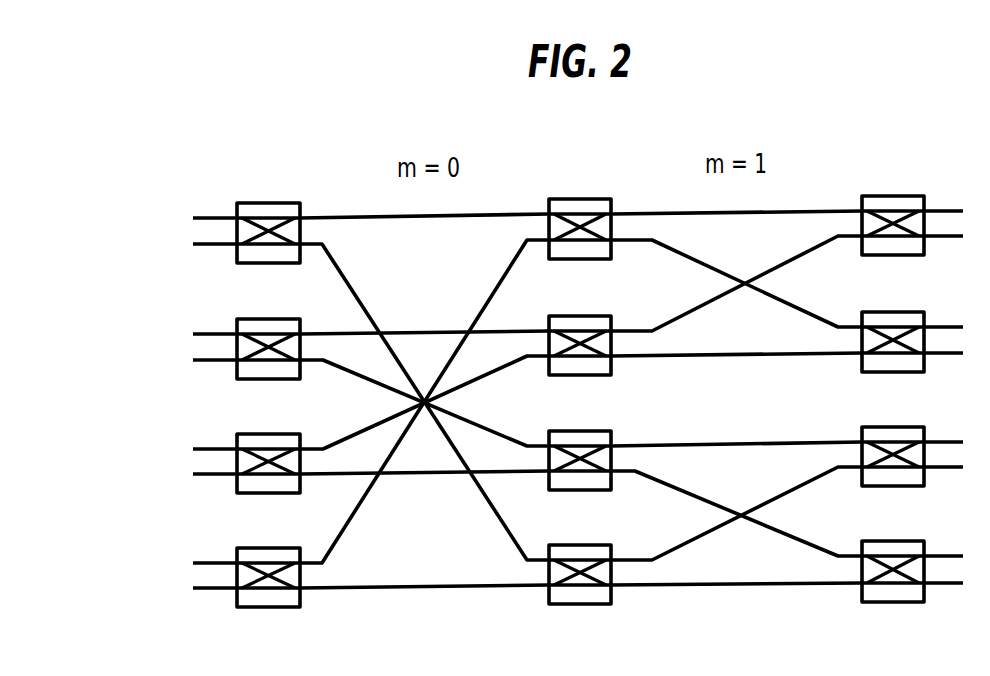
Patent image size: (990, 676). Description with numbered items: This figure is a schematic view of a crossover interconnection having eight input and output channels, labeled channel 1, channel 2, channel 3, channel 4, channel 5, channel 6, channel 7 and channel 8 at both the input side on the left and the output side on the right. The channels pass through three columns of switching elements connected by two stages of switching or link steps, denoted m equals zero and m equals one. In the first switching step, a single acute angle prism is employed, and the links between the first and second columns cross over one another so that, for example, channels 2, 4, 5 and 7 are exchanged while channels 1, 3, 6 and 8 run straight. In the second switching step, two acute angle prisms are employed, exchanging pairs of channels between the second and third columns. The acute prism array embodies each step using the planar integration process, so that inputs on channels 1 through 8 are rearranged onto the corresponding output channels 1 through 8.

The input/output channel 1 is at (580, 209).
The input/output channel 2 is at (580, 390).
The input/output channel 3 is at (580, 291).
The input/output channel 4 is at (580, 390).
The input/output channel 5 is at (580, 407).
The input/output channel 6 is at (580, 504).
The input/output channel 7 is at (580, 408).
The input/output channel 8 is at (580, 589).